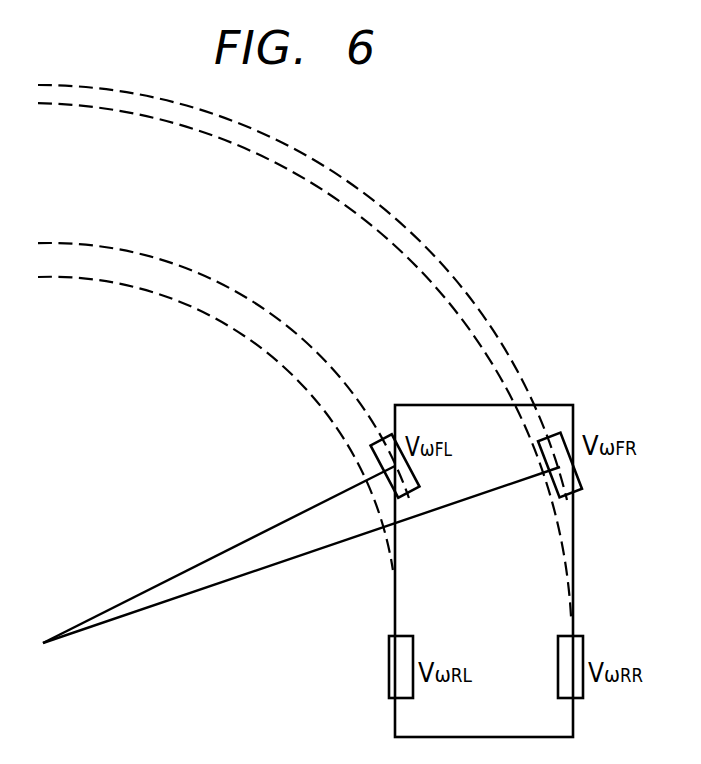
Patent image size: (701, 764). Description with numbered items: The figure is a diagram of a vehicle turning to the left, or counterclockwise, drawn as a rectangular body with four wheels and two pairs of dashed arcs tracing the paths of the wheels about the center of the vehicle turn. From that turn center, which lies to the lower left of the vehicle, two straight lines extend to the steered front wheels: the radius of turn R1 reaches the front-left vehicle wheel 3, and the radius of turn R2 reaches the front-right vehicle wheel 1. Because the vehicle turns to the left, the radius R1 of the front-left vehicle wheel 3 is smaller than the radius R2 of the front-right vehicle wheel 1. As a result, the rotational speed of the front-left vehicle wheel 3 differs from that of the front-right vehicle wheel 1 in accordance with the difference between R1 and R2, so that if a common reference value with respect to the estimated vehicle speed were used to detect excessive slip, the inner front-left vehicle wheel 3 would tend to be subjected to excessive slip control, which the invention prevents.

The front-right vehicle wheel 1 is at (575, 475).
The front-left vehicle wheel 3 is at (374, 462).
The radius of turn of the front-left vehicle wheel R1 is at (219, 554).
The radius of turn of the front-right vehicle wheel R2 is at (301, 555).